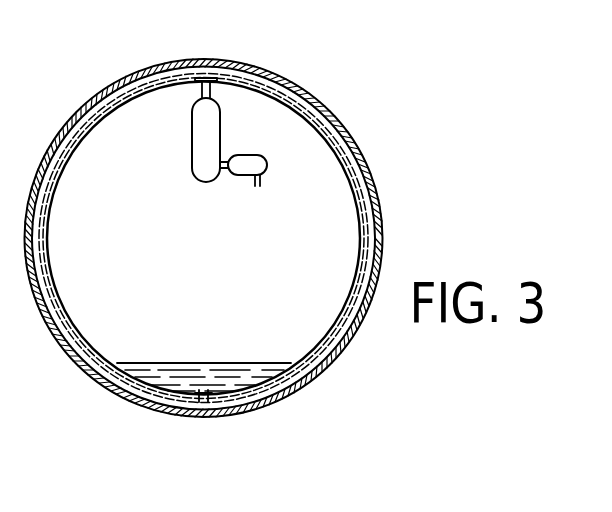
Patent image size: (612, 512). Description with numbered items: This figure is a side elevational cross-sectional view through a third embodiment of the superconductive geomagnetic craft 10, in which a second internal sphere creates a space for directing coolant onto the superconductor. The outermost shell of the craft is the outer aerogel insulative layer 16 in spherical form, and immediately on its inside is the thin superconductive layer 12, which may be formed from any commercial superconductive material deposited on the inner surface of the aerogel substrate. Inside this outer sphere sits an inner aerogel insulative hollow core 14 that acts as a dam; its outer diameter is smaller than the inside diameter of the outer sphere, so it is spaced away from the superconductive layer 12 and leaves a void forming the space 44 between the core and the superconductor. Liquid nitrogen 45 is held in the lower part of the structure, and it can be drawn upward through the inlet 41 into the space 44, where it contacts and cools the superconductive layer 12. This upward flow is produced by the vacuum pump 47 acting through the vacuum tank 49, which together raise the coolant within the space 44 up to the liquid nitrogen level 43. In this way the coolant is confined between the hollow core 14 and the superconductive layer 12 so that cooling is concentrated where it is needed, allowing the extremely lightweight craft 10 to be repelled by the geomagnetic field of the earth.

The superconductive geomagnetic craft 10 is at (413, 82).
The superconductive layer 12 is at (120, 82).
The inner aerogel insulative hollow core 14 is at (252, 88).
The outer aerogel insulative layer 16 is at (177, 60).
The inlet 41 is at (205, 402).
The liquid nitrogen level 43 is at (273, 88).
The space 44 is at (347, 148).
The liquid nitrogen 45 is at (240, 378).
The vacuum pump 47 is at (267, 165).
The vacuum tank 49 is at (192, 148).